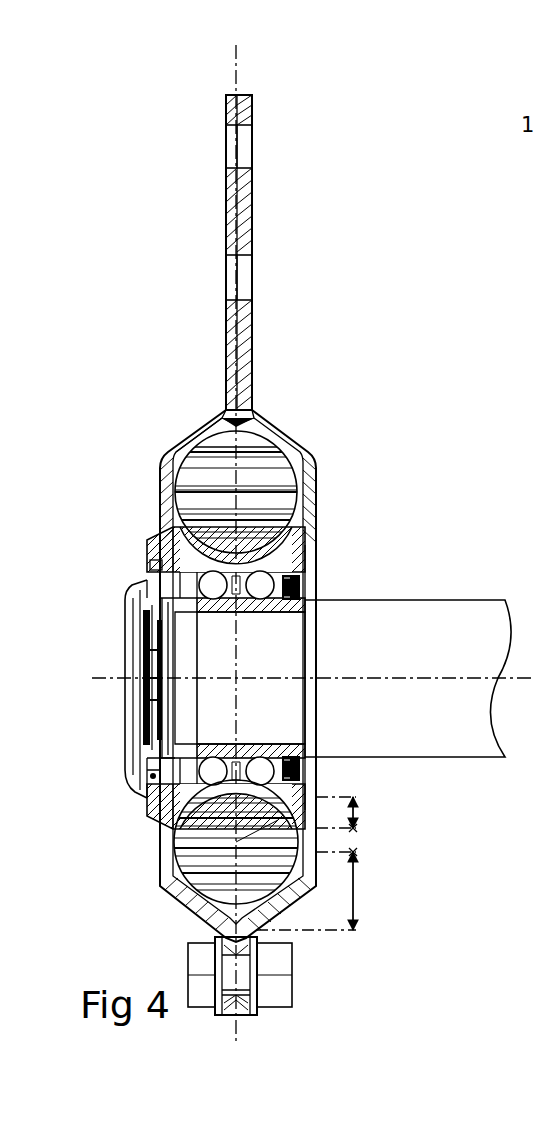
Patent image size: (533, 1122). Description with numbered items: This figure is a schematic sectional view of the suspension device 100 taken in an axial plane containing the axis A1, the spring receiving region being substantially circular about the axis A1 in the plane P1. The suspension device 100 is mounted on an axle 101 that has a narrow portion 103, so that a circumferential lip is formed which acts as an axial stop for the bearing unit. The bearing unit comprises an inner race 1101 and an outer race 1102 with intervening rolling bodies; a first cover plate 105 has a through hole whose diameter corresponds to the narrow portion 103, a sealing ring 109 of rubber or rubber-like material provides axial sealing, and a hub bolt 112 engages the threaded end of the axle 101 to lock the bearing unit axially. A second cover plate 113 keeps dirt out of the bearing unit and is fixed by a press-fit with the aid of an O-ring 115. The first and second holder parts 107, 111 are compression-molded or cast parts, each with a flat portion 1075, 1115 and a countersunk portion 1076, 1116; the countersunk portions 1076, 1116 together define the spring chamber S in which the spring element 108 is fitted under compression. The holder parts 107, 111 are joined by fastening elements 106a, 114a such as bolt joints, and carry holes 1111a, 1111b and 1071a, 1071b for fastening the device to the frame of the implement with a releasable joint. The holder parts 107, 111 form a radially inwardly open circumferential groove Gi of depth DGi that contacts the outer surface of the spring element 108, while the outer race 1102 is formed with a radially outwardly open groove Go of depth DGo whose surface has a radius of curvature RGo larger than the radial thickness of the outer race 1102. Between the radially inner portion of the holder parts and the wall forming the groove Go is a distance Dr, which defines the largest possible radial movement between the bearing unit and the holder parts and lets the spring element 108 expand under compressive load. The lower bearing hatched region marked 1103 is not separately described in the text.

The suspension device 100 is at (118, 78).
The plane P1 is at (236, 72).
The axis A1 is at (115, 678).
The first holder part 107 is at (246, 252).
The second holder part 111 is at (226, 208).
The hole 1111a is at (226, 150).
The hole 1111b is at (226, 280).
The hole 1071a is at (245, 143).
The hole 1071b is at (246, 273).
The flat portion 1075 is at (287, 207).
The flat portion 1115 is at (205, 315).
The countersunk portion 1076 is at (320, 455).
The countersunk portion 1116 is at (160, 442).
The spring chamber S is at (205, 458).
The first cover plate 105 is at (306, 562).
The spring element 108 is at (190, 488).
The groove Gi is at (243, 460).
The outer race 1102 is at (175, 548).
The sealing ring 109 is at (300, 590).
The narrow portion 103 is at (284, 658).
The axle 101 is at (431, 660).
The second cover plate 113 is at (137, 615).
The hub bolt 112 is at (152, 735).
The O-ring 115 is at (147, 780).
The lower bearing 1103 is at (172, 800).
The inner race 1101 is at (302, 770).
The groove Go is at (212, 830).
The radius of curvature RGo is at (278, 821).
The depth DGo is at (361, 813).
The distance Dr is at (353, 840).
The depth DGi is at (328, 891).
The fastening element 106a is at (274, 956).
The fastening element 114a is at (200, 968).